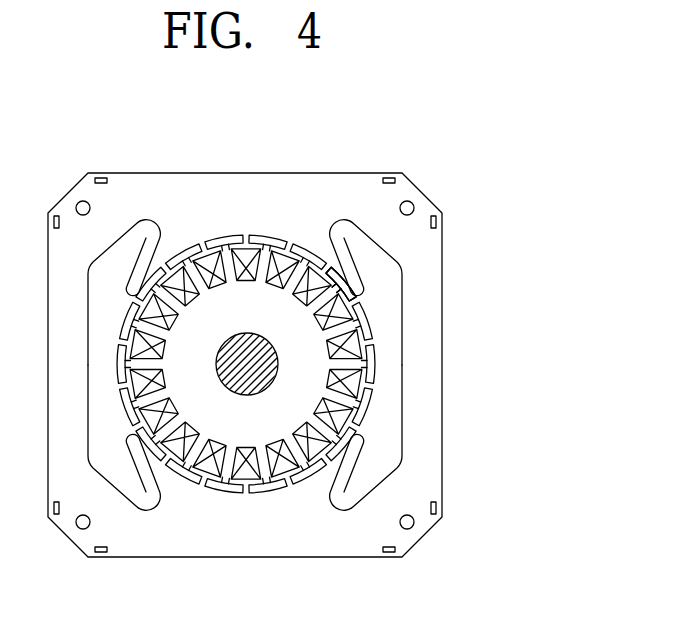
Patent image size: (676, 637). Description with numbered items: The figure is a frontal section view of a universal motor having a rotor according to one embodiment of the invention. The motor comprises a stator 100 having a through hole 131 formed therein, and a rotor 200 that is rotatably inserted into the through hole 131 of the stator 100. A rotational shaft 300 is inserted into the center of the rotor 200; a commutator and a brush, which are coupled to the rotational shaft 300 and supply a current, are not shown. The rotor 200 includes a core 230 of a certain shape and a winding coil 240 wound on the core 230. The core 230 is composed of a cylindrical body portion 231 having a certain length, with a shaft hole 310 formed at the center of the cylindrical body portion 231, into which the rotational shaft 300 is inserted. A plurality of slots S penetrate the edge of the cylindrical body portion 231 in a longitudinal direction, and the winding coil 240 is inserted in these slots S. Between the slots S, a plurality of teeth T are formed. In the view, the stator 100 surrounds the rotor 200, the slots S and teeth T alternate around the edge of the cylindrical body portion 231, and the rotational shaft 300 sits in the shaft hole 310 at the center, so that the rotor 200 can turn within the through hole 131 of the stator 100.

The stator 100 is at (447, 429).
The through hole 131 is at (345, 448).
The rotor 200 is at (318, 285).
The core 230 is at (267, 245).
The winding coil 240 is at (287, 248).
The cylindrical body portion 231 is at (295, 331).
The rotational shaft 300 is at (351, 265).
The shaft hole 310 is at (278, 365).
The teeth T is at (333, 268).
The slots S is at (362, 341).